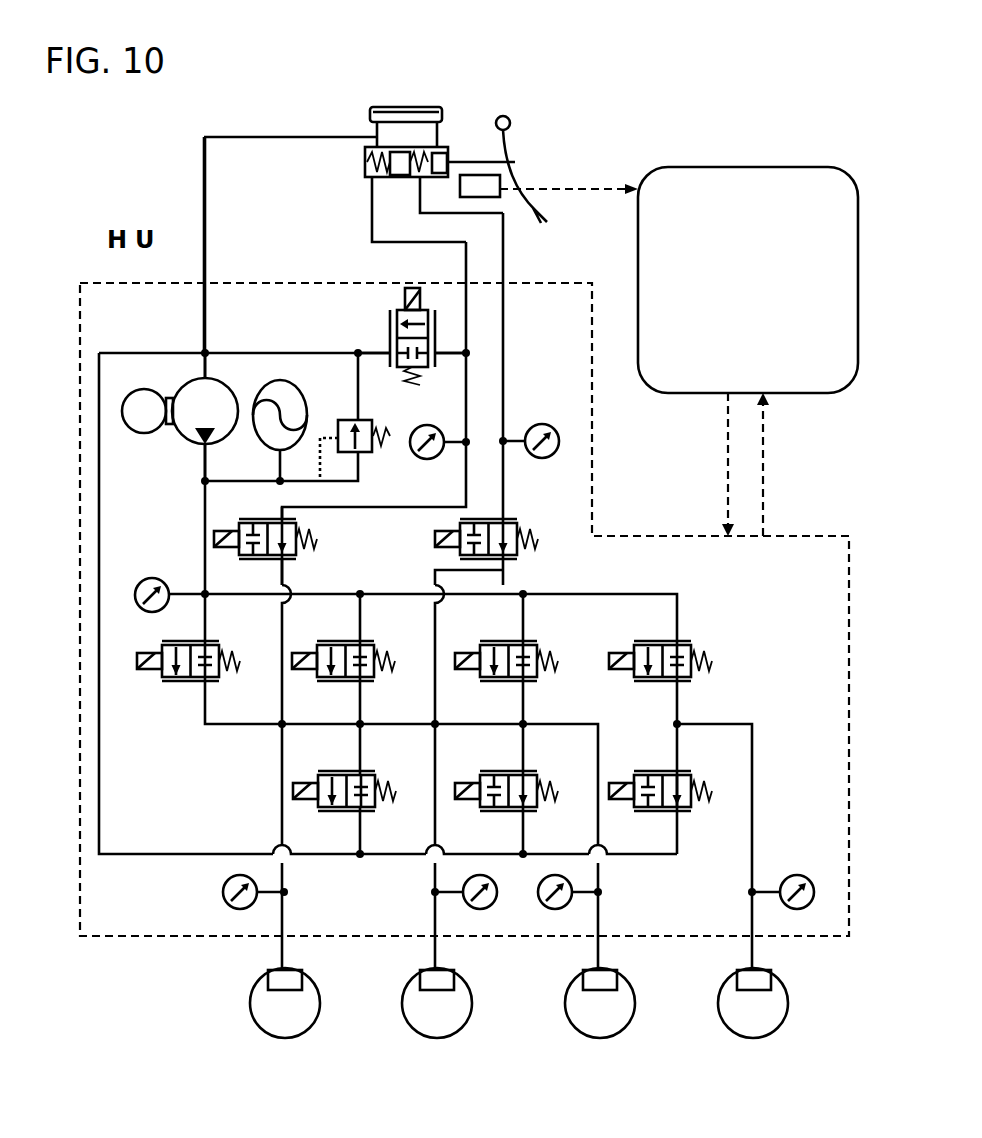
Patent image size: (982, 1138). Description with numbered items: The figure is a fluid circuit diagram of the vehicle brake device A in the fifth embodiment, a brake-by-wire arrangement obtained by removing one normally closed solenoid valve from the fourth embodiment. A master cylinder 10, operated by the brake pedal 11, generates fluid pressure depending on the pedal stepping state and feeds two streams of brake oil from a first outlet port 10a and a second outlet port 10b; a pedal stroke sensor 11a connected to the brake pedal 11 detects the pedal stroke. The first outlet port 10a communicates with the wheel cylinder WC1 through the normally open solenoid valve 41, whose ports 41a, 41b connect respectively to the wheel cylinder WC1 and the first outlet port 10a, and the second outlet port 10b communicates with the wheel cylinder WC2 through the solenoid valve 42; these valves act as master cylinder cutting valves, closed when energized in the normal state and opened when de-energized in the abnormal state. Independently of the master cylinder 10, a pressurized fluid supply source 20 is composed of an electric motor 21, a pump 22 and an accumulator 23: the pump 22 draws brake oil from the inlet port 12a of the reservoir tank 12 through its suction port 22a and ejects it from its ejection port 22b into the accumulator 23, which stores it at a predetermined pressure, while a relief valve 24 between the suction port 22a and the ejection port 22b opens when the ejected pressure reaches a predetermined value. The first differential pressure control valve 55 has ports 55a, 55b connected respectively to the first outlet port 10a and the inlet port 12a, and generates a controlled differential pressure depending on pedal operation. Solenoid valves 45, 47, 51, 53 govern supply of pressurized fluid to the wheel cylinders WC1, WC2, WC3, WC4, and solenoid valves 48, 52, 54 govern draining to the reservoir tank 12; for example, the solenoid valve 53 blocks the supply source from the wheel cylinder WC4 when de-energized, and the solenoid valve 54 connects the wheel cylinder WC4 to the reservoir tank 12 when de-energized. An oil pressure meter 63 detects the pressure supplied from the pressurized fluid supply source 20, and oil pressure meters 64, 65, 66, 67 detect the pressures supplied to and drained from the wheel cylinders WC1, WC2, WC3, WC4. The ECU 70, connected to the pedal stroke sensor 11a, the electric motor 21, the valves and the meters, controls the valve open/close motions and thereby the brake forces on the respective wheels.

The master cylinder 10 is at (363, 158).
The first outlet port 10a is at (372, 178).
The second outlet port 10b is at (420, 178).
The brake pedal 11 is at (528, 168).
The pedal stroke sensor 11a is at (487, 198).
The reservoir tank 12 is at (403, 110).
The inlet port 12a is at (376, 137).
The pressurized fluid supply source 20 is at (151, 395).
The electric motor 21 is at (122, 413).
The pump 22 is at (186, 380).
The suction port 22a is at (205, 378).
The ejection port 22b is at (205, 443).
The accumulator 23 is at (290, 383).
The relief valve 24 is at (360, 420).
The solenoid valve 41 is at (320, 540).
The port 41a is at (284, 560).
The port 41b is at (282, 520).
The solenoid valve 42 is at (510, 521).
The solenoid valve 45 is at (215, 641).
The solenoid valve 47 is at (370, 641).
The solenoid valve 48 is at (343, 773).
The solenoid valve 51 is at (533, 641).
The solenoid valve 52 is at (502, 773).
The solenoid valve 53 is at (687, 641).
The solenoid valve 54 is at (657, 773).
The first differential pressure control valve 55 is at (402, 308).
The port 55a is at (437, 350).
The port 55b is at (392, 350).
The oil pressure meter 63 is at (152, 578).
The oil pressure meter 64 is at (222, 893).
The oil pressure meter 65 is at (490, 879).
The oil pressure meter 66 is at (547, 906).
The oil pressure meter 67 is at (797, 875).
The ECU 70 is at (805, 168).
The vehicle brake device A is at (660, 115).
The wheel cylinder WC1 is at (270, 972).
The wheel cylinder WC2 is at (424, 972).
The wheel cylinder WC3 is at (587, 972).
The wheel cylinder WC4 is at (742, 972).